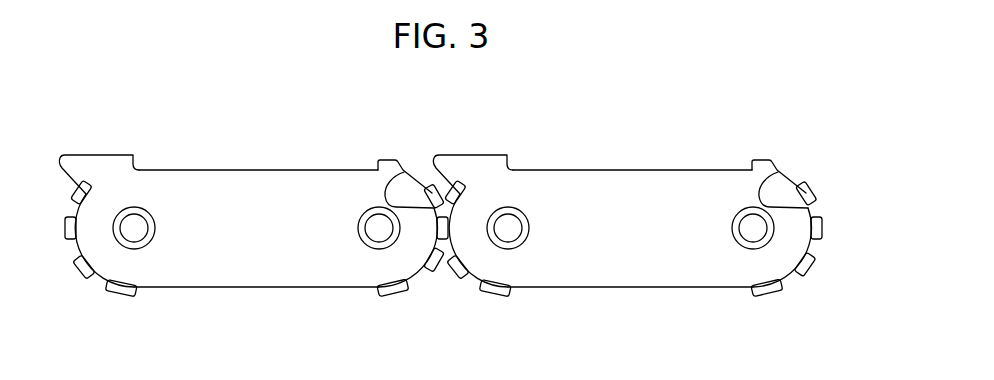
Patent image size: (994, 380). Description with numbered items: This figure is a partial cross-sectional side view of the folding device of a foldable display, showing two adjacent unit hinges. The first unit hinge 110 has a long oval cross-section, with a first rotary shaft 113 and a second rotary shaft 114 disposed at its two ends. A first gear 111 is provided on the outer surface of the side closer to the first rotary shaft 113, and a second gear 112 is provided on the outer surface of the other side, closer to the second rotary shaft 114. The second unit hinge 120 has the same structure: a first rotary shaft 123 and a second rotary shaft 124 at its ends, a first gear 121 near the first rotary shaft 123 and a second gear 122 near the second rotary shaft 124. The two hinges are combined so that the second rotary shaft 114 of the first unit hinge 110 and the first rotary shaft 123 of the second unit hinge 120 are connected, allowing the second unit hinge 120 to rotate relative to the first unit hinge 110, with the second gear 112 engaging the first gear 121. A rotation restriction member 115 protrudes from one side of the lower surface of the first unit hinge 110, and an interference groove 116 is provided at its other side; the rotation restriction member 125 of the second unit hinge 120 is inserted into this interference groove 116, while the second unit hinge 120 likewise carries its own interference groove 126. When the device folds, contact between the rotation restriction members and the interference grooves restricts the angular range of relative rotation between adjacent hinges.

The first unit hinge 110 is at (270, 170).
The first gear 111 is at (79, 277).
The second gear 112 is at (402, 293).
The first rotary shaft 113 is at (157, 262).
The second rotary shaft 114 is at (358, 262).
The rotation restriction member 115 is at (104, 170).
The interference groove 116 is at (412, 185).
The second unit hinge 120 is at (632, 170).
The first gear 121 is at (494, 293).
The second gear 122 is at (801, 278).
The first rotary shaft 123 is at (531, 262).
The second rotary shaft 124 is at (736, 262).
The rotation restriction member 125 is at (484, 170).
The interference groove 126 is at (786, 185).